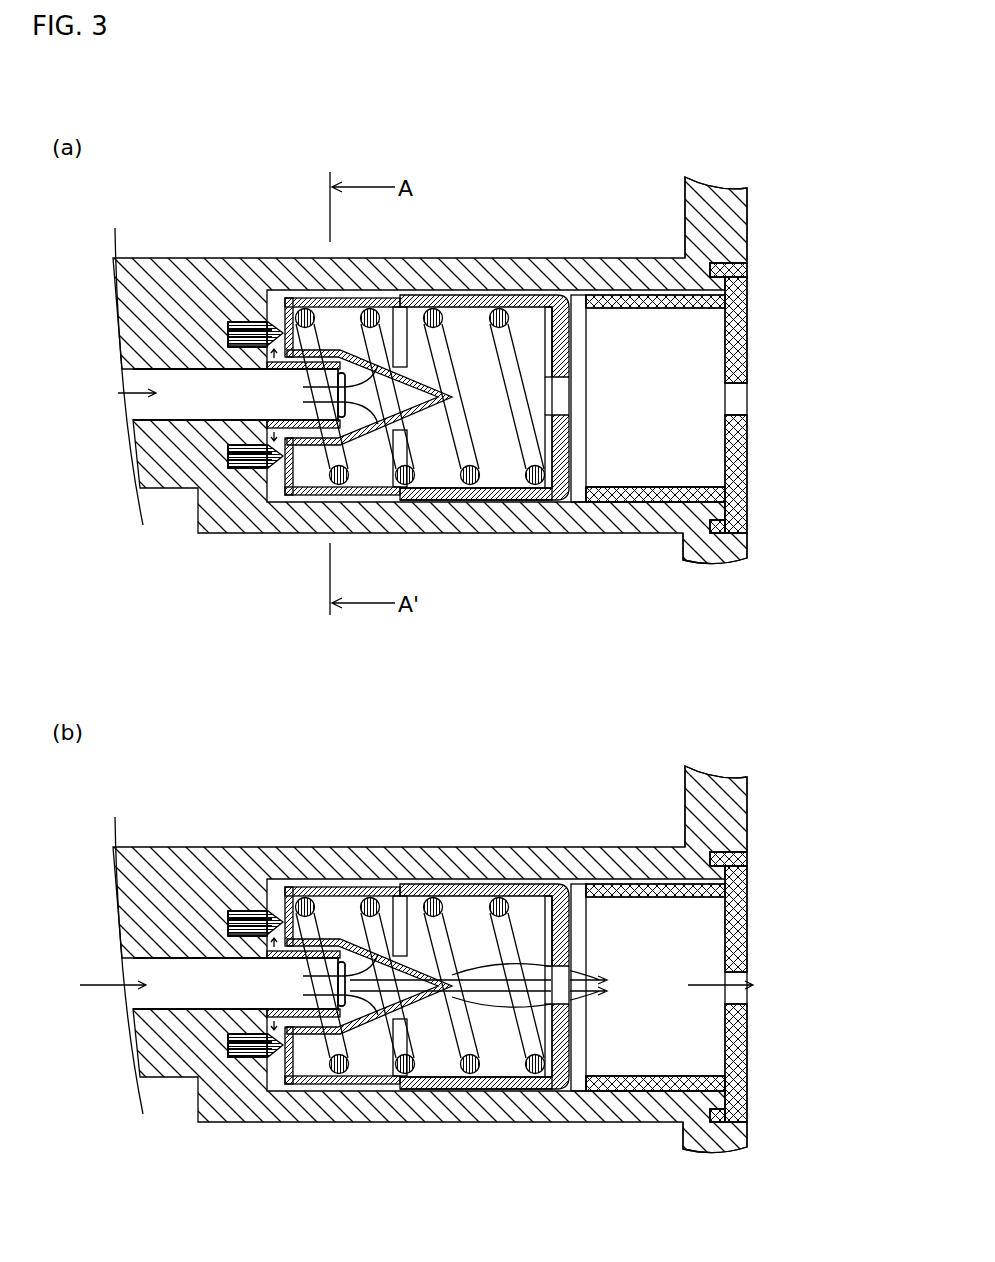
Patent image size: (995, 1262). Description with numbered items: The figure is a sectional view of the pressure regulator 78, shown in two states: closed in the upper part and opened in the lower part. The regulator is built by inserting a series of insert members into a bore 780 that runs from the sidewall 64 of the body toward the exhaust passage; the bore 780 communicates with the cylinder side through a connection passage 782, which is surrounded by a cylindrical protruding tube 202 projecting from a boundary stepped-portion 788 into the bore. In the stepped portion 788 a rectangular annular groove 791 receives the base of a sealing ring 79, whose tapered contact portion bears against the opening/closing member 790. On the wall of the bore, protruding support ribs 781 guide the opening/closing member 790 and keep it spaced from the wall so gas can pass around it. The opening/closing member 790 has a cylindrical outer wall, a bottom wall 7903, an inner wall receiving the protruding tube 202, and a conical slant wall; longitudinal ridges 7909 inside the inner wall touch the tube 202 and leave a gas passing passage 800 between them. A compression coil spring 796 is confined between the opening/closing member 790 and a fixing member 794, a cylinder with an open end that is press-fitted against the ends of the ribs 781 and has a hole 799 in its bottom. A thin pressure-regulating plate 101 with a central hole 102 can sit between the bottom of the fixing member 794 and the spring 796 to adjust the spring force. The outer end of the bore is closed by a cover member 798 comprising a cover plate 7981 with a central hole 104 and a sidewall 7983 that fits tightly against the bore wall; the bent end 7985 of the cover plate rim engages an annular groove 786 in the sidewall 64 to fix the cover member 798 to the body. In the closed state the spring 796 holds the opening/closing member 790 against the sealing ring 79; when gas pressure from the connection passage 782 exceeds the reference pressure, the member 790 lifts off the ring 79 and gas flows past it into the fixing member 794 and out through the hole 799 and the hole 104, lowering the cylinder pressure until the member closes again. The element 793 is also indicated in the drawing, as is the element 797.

The pressure regulator 78 is at (825, 297).
The sidewall 64 is at (730, 222).
The annular groove 786 is at (712, 522).
The protruding support ribs 781 is at (430, 298).
The connection passage 782 is at (290, 420).
The ridges 7909 is at (350, 350).
The gas passing passage 800 is at (300, 440).
The valve body 793 is at (372, 495).
The bore 780 is at (578, 313).
The cover member 798 is at (758, 352).
The hole 104 is at (745, 400).
The cover plate 7981 is at (748, 455).
The sidewall 7983 is at (638, 490).
The end of rim portion 7985 is at (702, 548).
The sealing ring 79 is at (252, 330).
The opening/closing member 790 is at (270, 477).
The boundary stepped-portion 788 is at (270, 322).
The annular groove 791 is at (212, 322).
The bottom wall 7903 is at (282, 480).
The protruding tube 202 is at (275, 437).
The bore 797 is at (255, 347).
The compression coil spring 796 is at (465, 438).
The fixing member 794 is at (558, 497).
The hole 799 is at (562, 400).
The hole 102 is at (545, 392).
The pressure-regulating plate 101 is at (542, 318).